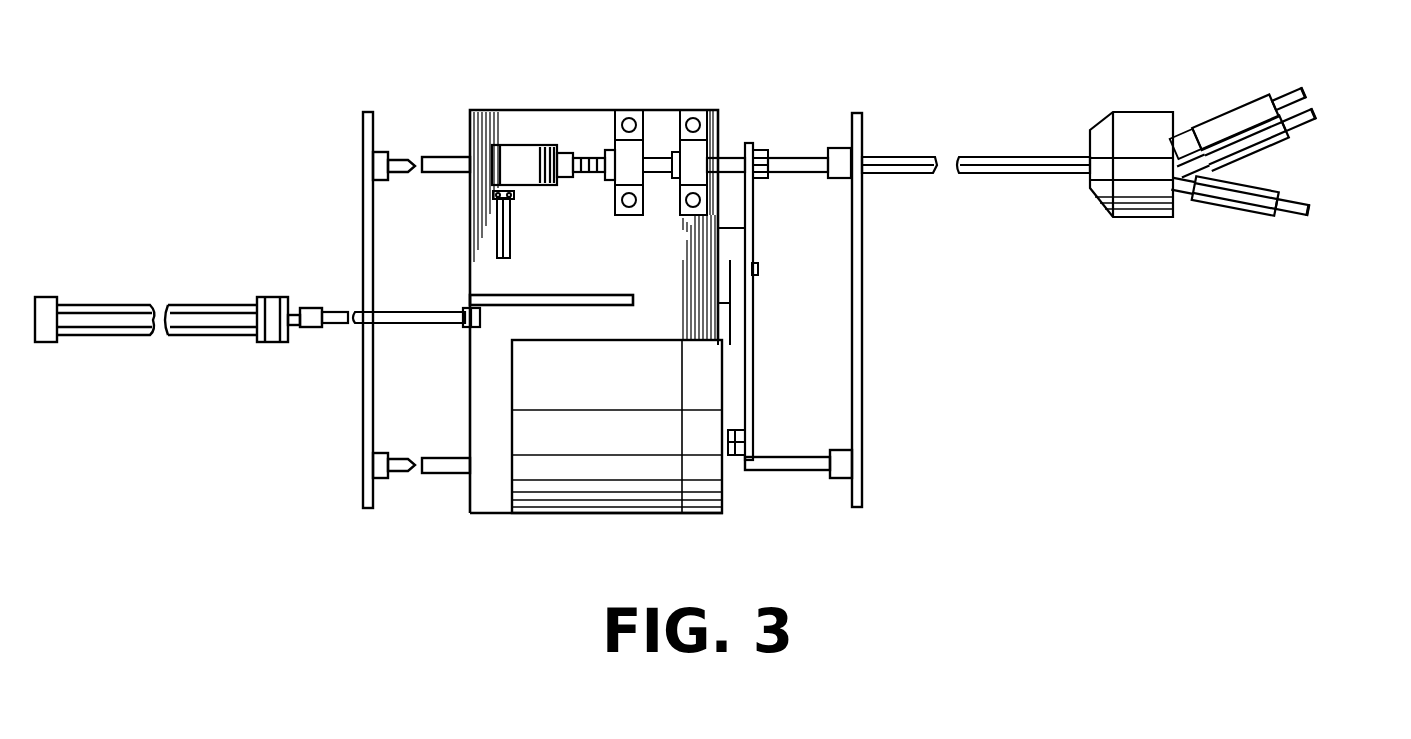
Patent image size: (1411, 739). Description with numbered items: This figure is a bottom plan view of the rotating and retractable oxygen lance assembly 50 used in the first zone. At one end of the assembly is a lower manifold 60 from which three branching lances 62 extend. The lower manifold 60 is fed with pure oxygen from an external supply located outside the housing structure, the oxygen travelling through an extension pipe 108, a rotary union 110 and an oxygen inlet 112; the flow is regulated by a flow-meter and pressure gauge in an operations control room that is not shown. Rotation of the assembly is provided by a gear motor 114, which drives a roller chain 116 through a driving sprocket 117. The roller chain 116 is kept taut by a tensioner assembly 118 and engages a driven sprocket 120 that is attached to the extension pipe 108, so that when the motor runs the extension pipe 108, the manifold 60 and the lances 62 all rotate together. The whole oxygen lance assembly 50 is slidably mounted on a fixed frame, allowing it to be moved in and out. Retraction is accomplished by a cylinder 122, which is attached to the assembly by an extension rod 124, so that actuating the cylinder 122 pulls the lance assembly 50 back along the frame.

The oxygen lance assembly 50 is at (840, 76).
The lower manifold 60 is at (1150, 120).
The branching lances 62 is at (1312, 88).
The extension pipe 108 is at (908, 160).
The rotary union 110 is at (518, 146).
The oxygen inlet 112 is at (510, 215).
The gear motor 114 is at (703, 492).
The roller chain 116 is at (755, 362).
The driving sprocket 117 is at (750, 412).
The tensioner assembly 118 is at (766, 266).
The driven sprocket 120 is at (763, 150).
The cylinder 122 is at (108, 312).
The extension rod 124 is at (435, 312).